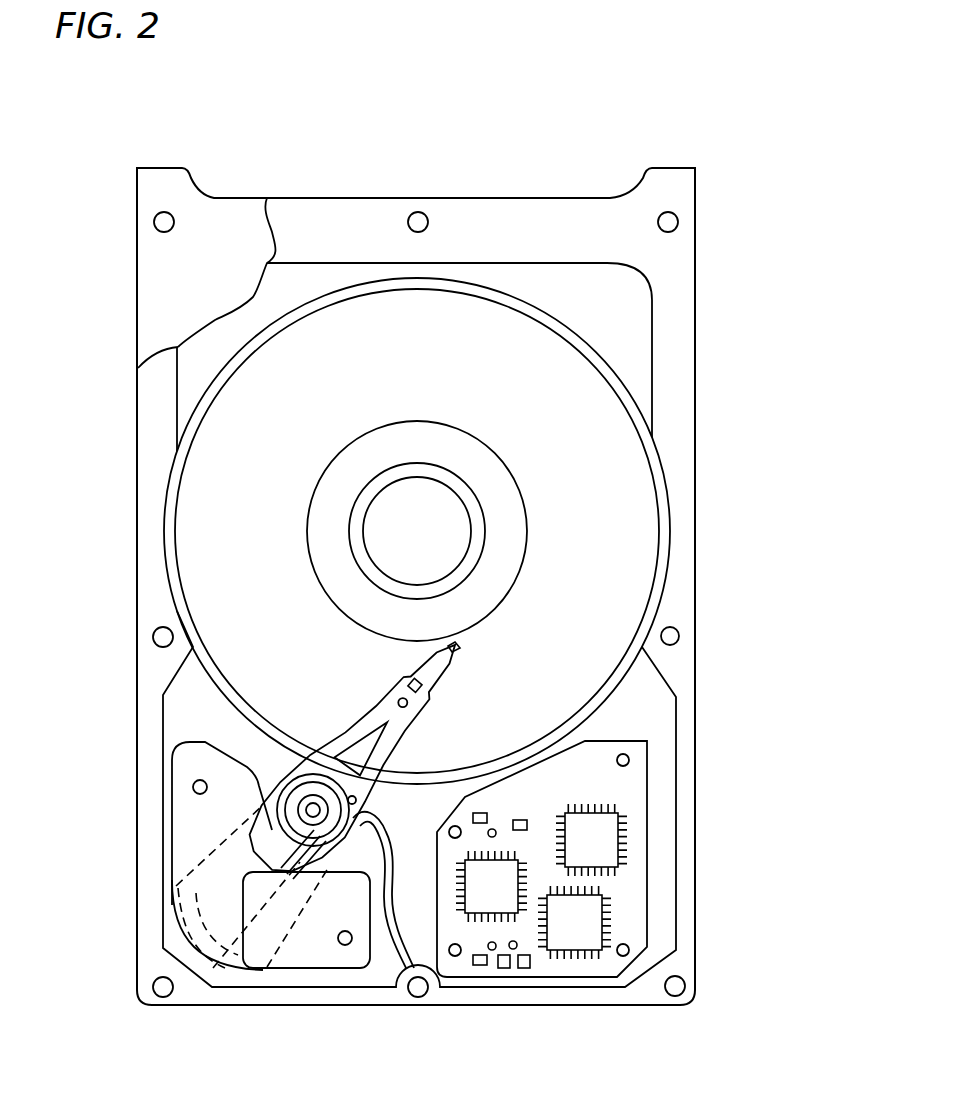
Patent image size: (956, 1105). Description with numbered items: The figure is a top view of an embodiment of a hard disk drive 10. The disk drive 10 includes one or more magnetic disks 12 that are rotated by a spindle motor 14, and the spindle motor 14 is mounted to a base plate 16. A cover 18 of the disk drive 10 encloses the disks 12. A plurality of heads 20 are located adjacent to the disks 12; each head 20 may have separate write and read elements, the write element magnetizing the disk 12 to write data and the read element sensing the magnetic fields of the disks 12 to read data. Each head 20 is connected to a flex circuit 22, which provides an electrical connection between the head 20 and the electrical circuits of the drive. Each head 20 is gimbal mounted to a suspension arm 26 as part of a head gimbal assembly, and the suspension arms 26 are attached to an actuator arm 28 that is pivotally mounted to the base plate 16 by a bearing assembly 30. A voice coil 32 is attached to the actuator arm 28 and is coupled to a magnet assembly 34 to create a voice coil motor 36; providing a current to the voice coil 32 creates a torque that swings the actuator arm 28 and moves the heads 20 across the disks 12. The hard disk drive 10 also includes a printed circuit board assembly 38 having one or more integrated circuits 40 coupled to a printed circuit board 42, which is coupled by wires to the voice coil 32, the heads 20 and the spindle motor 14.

The hard disk drive 10 is at (690, 516).
The magnetic disk 12 is at (417, 531).
The spindle motor 14 is at (420, 530).
The base plate 16 is at (635, 352).
The cover 18 is at (152, 273).
The head 20 is at (457, 645).
The flex circuit 22 is at (412, 963).
The suspension arm 26 is at (427, 673).
The actuator arm 28 is at (320, 765).
The bearing assembly 30 is at (298, 825).
The voice coil 32 is at (245, 955).
The magnet assembly 34 is at (320, 957).
The voice coil motor 36 is at (140, 892).
The printed circuit board assembly 38 is at (635, 885).
The integrated circuit 40 is at (565, 927).
The printed circuit board 42 is at (630, 790).